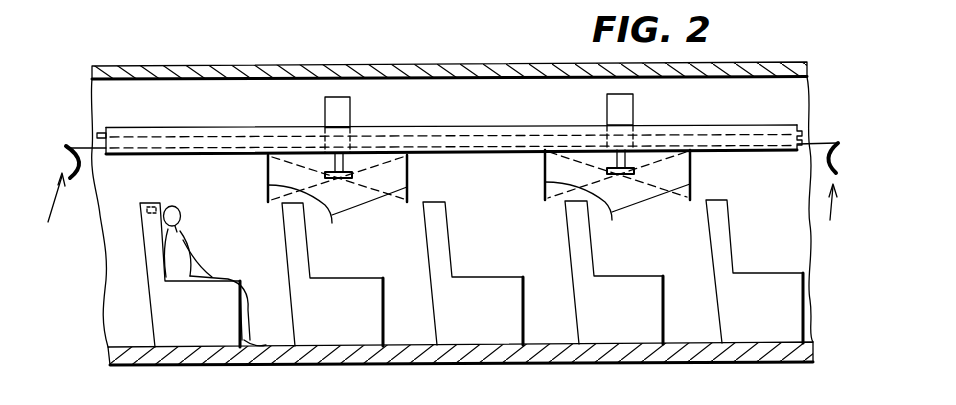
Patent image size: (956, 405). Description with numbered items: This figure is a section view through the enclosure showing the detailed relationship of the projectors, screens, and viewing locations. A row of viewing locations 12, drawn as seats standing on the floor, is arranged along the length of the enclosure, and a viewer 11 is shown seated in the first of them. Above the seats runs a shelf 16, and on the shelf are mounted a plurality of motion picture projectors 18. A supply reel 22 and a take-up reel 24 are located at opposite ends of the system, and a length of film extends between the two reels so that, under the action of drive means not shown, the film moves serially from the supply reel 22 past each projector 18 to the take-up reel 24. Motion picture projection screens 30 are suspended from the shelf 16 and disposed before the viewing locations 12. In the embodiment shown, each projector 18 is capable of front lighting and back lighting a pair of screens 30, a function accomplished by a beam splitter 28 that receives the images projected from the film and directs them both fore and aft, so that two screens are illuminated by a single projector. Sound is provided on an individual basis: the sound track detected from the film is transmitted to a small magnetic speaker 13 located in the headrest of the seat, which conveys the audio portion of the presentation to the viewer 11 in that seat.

The viewer 11 is at (192, 221).
The viewing location 12 is at (330, 302).
The magnetic speaker 13 is at (146, 205).
The shelf 16 is at (768, 160).
The motion picture projector 18 is at (333, 97).
The supply reel 22 is at (835, 194).
The take-up reel 24 is at (63, 196).
The beam splitter 28 is at (342, 170).
The motion picture projection screen 30 is at (479, 193).